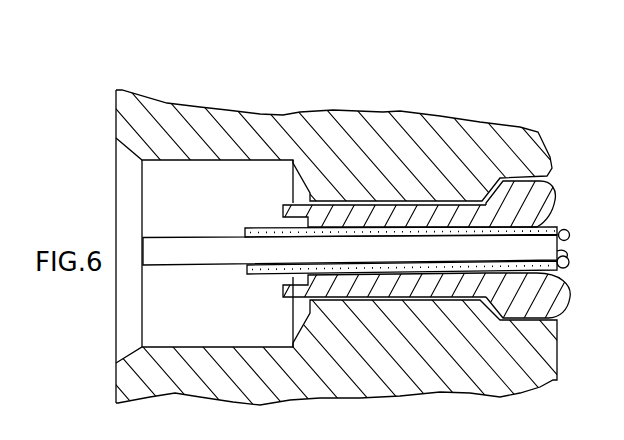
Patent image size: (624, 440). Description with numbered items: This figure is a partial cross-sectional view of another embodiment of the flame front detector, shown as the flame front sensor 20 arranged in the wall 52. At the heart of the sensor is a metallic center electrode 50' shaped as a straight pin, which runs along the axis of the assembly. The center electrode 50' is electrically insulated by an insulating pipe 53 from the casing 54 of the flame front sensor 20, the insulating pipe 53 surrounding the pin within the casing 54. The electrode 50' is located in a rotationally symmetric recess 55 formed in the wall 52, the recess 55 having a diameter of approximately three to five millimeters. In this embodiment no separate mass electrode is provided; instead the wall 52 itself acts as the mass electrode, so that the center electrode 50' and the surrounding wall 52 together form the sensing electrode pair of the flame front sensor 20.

The flame front sensor 20 is at (559, 191).
The center electrode 50' is at (350, 283).
The wall 52 is at (223, 126).
The insulating pipe 53 is at (258, 228).
The casing 54 is at (396, 218).
The recess 55 is at (165, 160).